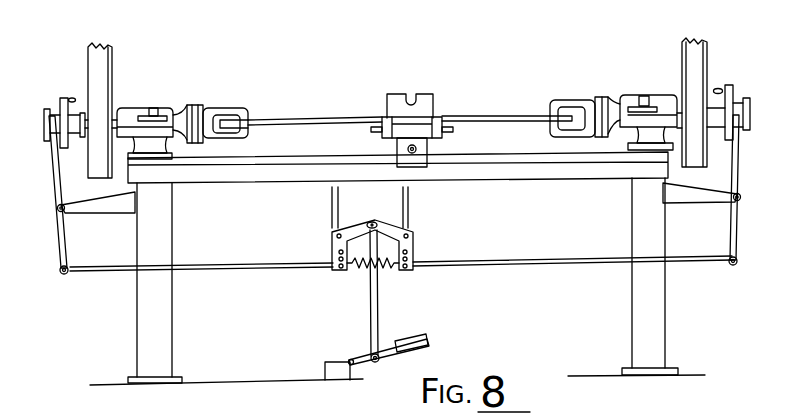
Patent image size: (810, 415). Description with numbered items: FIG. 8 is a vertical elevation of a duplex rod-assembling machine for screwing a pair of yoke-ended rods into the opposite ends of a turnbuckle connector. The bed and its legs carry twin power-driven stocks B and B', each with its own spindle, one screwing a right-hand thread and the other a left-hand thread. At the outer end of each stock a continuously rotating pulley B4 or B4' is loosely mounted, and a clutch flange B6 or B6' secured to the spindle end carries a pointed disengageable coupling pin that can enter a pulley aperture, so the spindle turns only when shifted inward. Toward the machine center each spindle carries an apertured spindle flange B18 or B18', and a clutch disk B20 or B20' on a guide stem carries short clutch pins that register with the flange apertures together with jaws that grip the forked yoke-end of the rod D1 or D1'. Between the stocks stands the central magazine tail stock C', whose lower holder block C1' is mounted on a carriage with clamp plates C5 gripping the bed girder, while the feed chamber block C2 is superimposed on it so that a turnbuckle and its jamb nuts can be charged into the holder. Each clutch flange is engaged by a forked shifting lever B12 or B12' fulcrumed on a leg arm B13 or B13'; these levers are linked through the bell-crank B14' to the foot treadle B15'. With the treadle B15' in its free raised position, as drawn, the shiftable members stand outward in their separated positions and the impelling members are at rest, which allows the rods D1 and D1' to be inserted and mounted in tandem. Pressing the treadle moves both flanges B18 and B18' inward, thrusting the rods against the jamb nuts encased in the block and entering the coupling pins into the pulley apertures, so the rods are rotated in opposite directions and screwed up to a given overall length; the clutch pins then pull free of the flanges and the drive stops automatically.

The clutch flange B6 is at (53, 97).
The power-driven pulley B4 is at (117, 108).
The head stock B is at (142, 106).
The apertured spindle flange B18 is at (192, 97).
The clutch disk B20 is at (230, 104).
The yoke-end rod D1 is at (315, 103).
The central block C' is at (400, 102).
The block clamp C1' is at (422, 99).
The yoke-end rod D1' is at (496, 97).
The feed chamber block C2 is at (432, 138).
The clamp plates C5 is at (423, 160).
The coupling B20' is at (575, 97).
The shaft collar B18' is at (619, 97).
The tail stock B' is at (648, 99).
The power-driven pulley B4' is at (707, 99).
The hub groove B6' is at (740, 103).
The forked shifting lever B12 is at (45, 195).
The leg arm B13 is at (98, 224).
The clutch lever B12' is at (753, 190).
The link B13' is at (700, 212).
The bracket arm B14' is at (367, 245).
The foot treadle B15' is at (403, 348).